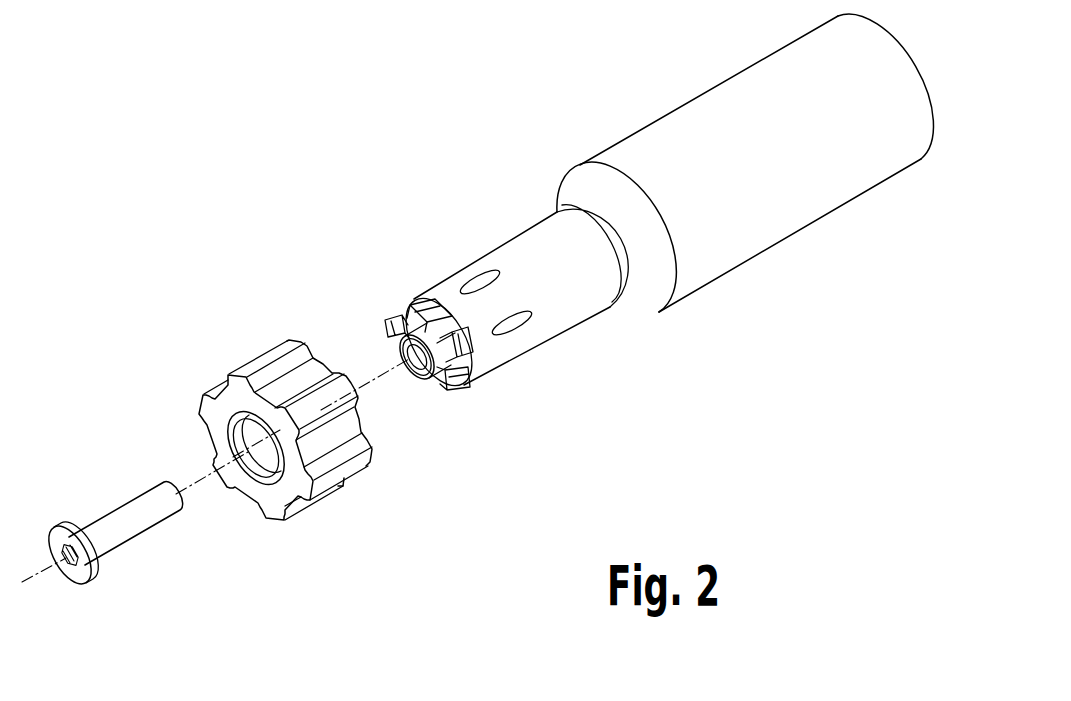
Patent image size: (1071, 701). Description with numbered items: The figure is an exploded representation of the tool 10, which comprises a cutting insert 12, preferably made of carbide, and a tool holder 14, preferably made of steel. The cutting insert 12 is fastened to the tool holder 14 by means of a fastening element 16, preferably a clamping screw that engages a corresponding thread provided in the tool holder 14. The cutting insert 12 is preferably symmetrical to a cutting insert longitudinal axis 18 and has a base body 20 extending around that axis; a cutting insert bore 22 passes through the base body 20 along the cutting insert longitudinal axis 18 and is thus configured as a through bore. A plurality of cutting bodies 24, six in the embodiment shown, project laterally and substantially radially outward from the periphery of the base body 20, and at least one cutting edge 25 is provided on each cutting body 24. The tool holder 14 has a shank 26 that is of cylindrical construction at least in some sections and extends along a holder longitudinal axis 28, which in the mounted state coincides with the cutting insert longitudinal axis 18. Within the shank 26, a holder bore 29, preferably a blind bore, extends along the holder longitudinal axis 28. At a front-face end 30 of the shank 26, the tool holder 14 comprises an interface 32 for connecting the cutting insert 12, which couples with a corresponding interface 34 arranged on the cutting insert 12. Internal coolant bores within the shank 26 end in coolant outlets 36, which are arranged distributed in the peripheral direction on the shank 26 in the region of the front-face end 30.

The tool 10 is at (282, 107).
The cutting insert 12 is at (335, 543).
The tool holder 14 is at (840, 245).
The fastening element 16 is at (75, 582).
The cutting insert longitudinal axis 18 is at (378, 378).
The base body 20 is at (266, 400).
The cutting insert bore 22 is at (238, 440).
The cutting bodies 24 is at (236, 376).
The cutting edge 25 is at (360, 475).
The shank 26 is at (694, 126).
The holder longitudinal axis 28 is at (496, 327).
The holder bore 29 is at (410, 347).
The front-face end 30 is at (470, 386).
The interface 32 is at (450, 392).
The corresponding interface 34 is at (352, 420).
The coolant outlets 36 is at (480, 282).